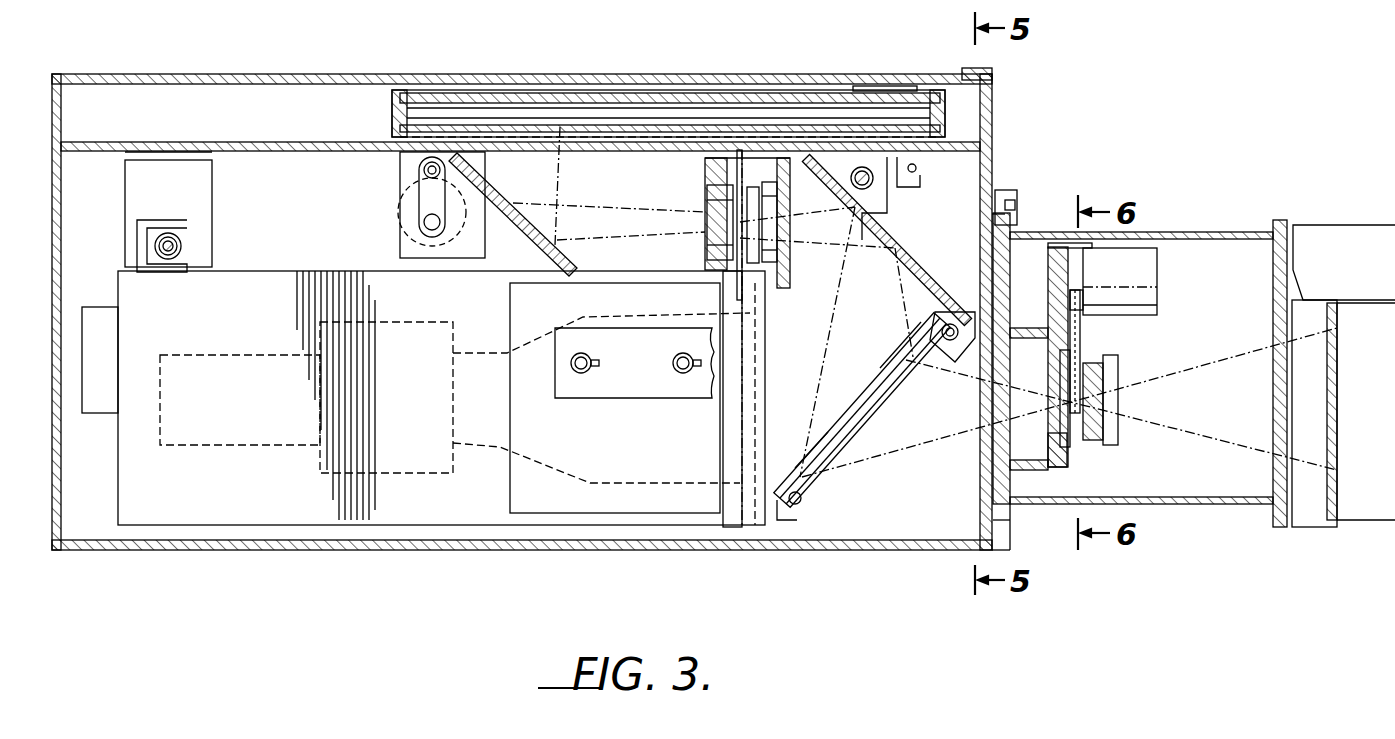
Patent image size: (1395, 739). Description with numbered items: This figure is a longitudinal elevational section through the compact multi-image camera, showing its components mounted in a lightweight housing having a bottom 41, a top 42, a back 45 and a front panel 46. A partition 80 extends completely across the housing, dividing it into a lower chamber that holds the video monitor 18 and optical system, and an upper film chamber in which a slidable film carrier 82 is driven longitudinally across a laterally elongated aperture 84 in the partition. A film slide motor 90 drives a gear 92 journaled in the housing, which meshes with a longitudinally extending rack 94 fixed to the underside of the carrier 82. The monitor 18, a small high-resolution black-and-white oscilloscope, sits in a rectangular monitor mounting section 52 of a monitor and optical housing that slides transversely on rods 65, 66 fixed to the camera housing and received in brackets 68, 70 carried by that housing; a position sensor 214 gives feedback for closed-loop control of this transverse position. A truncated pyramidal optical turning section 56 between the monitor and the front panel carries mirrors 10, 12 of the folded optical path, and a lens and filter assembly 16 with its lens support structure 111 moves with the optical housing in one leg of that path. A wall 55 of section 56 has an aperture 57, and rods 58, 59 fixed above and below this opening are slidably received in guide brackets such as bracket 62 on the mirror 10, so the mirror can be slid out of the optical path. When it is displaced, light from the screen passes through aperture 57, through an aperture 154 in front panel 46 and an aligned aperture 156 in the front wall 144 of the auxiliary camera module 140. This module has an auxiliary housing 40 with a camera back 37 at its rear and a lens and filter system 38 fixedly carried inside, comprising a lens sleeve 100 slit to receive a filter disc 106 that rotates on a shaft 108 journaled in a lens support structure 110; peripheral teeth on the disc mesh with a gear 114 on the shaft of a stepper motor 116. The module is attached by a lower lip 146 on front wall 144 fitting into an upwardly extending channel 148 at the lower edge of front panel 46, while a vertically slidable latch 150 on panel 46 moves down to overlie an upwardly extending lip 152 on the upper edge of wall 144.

The mirror 10 is at (889, 381).
The mirror 12 is at (914, 256).
The lens and filter assembly 16 is at (795, 245).
The video monitor 18 is at (582, 484).
The camera back 37 is at (1324, 225).
The lens and filter system 38 is at (1135, 397).
The auxiliary camera module housing 40 is at (1206, 232).
The bottom 41 is at (514, 550).
The top 42 is at (310, 73).
The back 45 is at (58, 512).
The front panel 46 is at (992, 168).
The monitor mounting section 52 is at (370, 522).
The wall 55 is at (824, 478).
The optical turning section 56 is at (920, 230).
The aperture 57 is at (832, 455).
The rod 58 is at (806, 506).
The rod 59 is at (944, 324).
The guide bracket 62 is at (816, 492).
The rod 65 is at (182, 244).
The rod 66 is at (882, 186).
The bracket 68 is at (174, 218).
The bracket 70 is at (858, 164).
The partition 80 is at (310, 142).
The film carrier 82 is at (522, 93).
The aperture 84 is at (596, 142).
The film slide motor 90 is at (400, 226).
The gear 92 is at (418, 170).
The rack 94 is at (438, 132).
The lens sleeve 100 is at (1100, 376).
The filter disc 106 is at (1082, 332).
The shaft 108 is at (1076, 355).
The lens support structure 110 is at (1048, 270).
The lens support structure 111 is at (790, 180).
The gear 114 is at (1080, 300).
The stepper motor 116 is at (1158, 278).
The auxiliary camera module 140 is at (1205, 518).
The front wall 144 is at (1012, 476).
The lip 146 is at (1000, 518).
The channel 148 is at (1000, 536).
The latch 150 is at (1018, 180).
The lip 152 is at (1016, 212).
The aperture 154 is at (1008, 473).
The aperture 156 is at (1008, 454).
The position sensor 214 is at (922, 168).